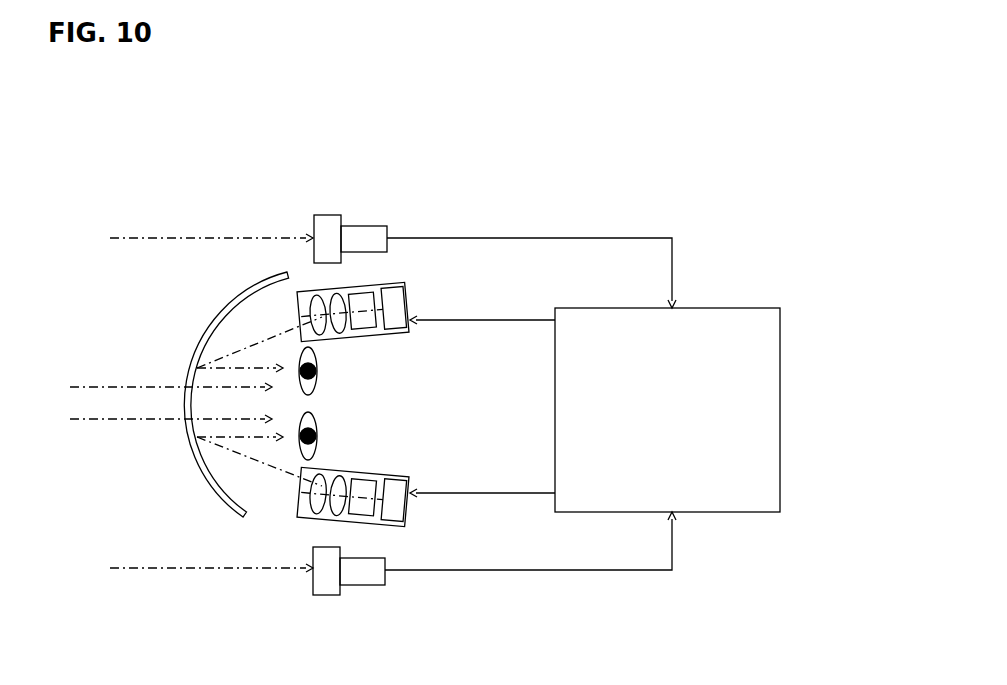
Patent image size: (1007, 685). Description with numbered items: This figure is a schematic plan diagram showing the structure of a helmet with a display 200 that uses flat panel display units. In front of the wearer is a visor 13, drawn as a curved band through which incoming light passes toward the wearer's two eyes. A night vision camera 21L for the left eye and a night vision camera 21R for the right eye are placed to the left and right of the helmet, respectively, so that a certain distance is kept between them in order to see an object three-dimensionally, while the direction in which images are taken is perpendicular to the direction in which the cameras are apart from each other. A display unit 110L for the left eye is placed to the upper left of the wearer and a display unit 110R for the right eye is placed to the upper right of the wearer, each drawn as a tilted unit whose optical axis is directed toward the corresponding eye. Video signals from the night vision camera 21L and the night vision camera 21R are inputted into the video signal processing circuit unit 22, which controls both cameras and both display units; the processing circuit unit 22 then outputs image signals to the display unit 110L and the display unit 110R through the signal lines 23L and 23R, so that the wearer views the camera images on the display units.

The helmet with a display 200 is at (435, 153).
The visor 13 is at (201, 467).
The display unit for the right eye 110R is at (302, 306).
The display unit for the left eye 110L is at (300, 493).
The night vision camera for the right eye 21R is at (332, 215).
The night vision camera for the left eye 21L is at (328, 583).
The video signal processing circuit unit 22 is at (730, 327).
The signal line 23R is at (518, 322).
The signal line 23L is at (445, 493).